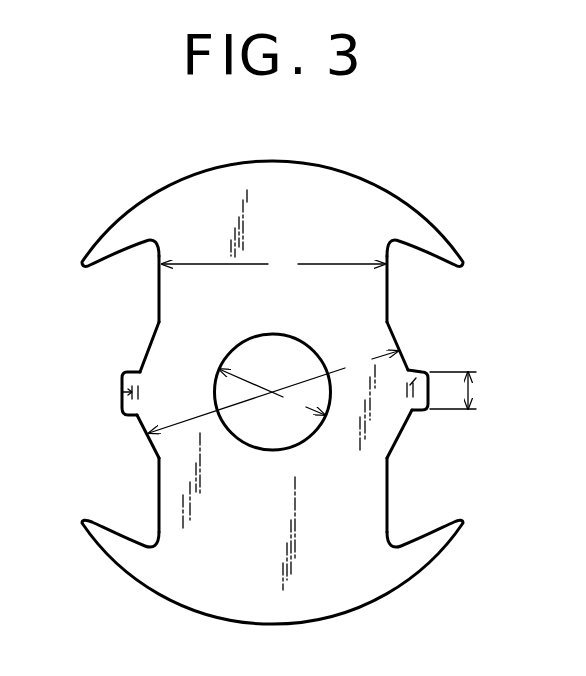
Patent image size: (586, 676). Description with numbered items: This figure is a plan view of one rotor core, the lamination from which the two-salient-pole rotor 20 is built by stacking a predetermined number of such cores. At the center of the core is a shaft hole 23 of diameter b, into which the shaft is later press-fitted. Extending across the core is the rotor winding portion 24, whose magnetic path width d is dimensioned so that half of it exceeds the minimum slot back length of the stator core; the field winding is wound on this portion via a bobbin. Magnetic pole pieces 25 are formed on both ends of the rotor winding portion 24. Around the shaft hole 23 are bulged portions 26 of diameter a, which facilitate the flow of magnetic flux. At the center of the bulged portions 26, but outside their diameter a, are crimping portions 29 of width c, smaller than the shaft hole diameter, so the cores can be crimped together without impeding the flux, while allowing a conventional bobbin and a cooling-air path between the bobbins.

The rotor 20 is at (436, 212).
The shaft hole 23 is at (252, 360).
The rotor winding portion 24 is at (350, 304).
The magnetic pole pieces 25 is at (330, 202).
The bulged portions 26 is at (158, 412).
The crimping portions 29 is at (123, 392).